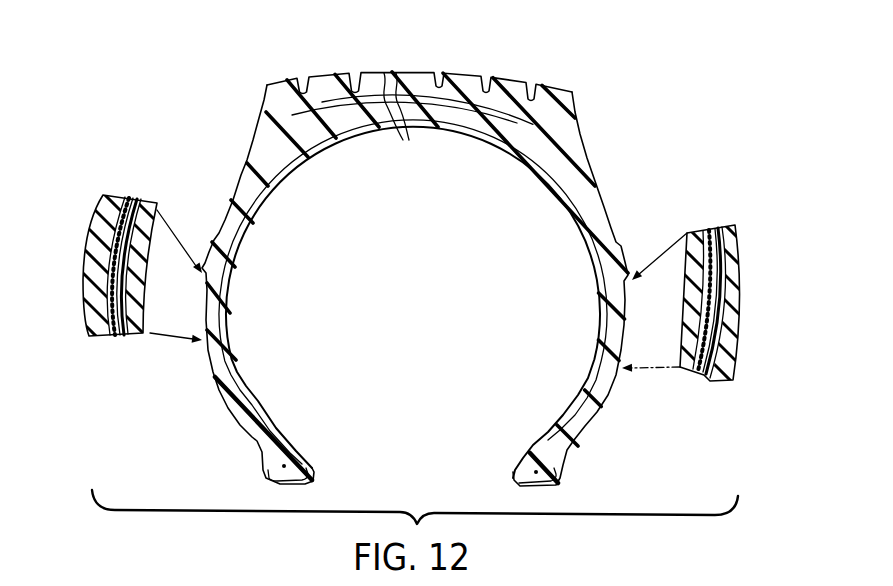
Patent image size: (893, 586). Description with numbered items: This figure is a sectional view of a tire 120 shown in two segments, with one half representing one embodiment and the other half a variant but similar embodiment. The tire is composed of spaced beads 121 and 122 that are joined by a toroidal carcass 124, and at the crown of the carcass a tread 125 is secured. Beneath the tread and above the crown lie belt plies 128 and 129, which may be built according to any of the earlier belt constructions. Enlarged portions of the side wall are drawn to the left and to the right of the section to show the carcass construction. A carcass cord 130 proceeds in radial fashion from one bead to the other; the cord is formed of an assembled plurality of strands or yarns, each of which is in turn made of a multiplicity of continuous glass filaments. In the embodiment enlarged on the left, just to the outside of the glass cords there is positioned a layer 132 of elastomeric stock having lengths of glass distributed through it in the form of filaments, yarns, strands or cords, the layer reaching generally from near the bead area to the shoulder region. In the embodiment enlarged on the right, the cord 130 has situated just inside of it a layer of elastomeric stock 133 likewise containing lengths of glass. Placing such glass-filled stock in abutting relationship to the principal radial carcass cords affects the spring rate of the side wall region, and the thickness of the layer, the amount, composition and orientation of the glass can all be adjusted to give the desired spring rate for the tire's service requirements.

The tire 120 is at (243, 99).
The bead 121 is at (286, 465).
The bead 122 is at (534, 471).
The toroidal carcass 124 is at (598, 289).
The tread 125 is at (497, 75).
The belt ply 128 is at (336, 97).
The belt ply 129 is at (391, 77).
The carcass cord 130 is at (466, 131).
The layer of elastomeric stock 132 is at (115, 243).
The layer of elastomeric stock 133 is at (695, 371).